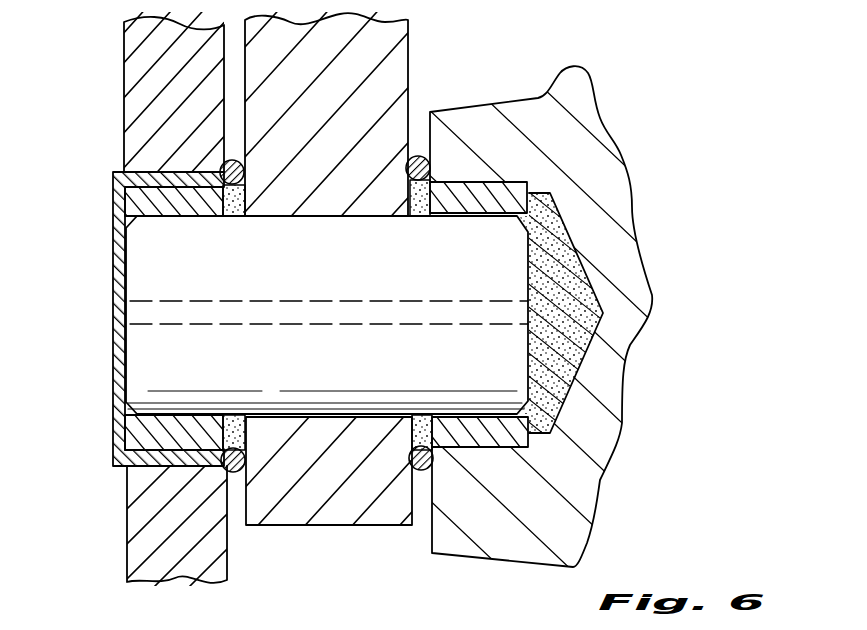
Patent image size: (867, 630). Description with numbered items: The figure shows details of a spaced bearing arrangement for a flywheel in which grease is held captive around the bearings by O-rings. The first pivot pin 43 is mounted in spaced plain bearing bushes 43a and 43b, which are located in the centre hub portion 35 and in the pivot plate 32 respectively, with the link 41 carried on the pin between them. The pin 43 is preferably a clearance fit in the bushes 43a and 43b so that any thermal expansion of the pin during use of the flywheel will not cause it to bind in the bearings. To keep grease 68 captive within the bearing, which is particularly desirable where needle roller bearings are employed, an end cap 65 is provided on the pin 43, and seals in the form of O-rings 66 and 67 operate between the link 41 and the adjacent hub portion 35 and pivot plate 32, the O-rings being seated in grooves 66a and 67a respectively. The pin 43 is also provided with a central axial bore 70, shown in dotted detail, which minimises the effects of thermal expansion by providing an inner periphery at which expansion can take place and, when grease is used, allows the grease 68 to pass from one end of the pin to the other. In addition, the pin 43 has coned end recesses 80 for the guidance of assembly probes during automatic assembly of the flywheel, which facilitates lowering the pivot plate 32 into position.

The pivot plate 32 is at (143, 518).
The link 41 is at (327, 66).
The centre hub portion 35 is at (598, 185).
The first pivot pin 43 is at (275, 267).
The plain bearing bush 43a is at (490, 197).
The plain bearing bush 43b is at (113, 172).
The end cap 65 is at (113, 218).
The coned end recess 80 is at (113, 310).
The O-ring 67 is at (236, 475).
The groove 67a is at (123, 443).
The O-ring 66 is at (423, 471).
The groove 66a is at (410, 463).
The grease 68 is at (233, 218).
The central axial bore 70 is at (442, 300).